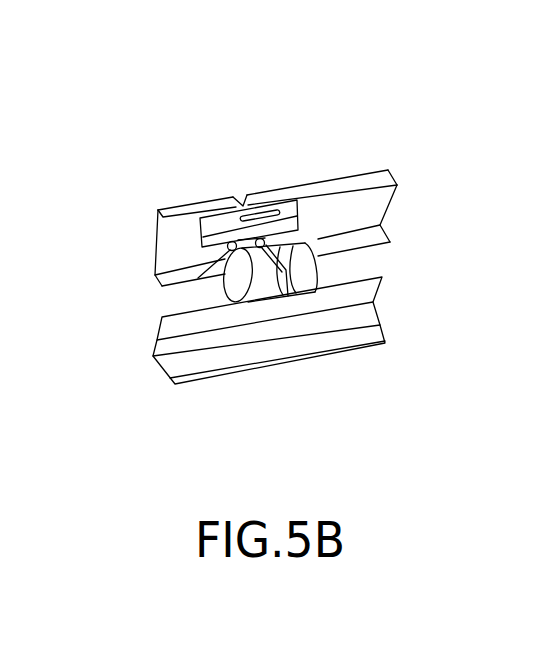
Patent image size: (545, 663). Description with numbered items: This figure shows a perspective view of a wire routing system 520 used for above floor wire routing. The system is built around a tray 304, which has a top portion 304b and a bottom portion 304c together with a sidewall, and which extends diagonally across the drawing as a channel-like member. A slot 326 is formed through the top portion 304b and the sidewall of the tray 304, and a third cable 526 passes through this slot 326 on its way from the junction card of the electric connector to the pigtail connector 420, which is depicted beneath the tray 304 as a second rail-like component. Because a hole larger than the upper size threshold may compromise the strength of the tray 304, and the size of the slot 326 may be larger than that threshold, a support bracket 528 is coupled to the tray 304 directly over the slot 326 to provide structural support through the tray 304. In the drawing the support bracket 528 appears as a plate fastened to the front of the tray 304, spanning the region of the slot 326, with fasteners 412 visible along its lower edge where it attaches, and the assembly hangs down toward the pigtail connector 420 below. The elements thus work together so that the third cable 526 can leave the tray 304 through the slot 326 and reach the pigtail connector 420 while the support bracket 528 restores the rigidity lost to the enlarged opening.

The wire routing system 520 is at (220, 126).
The tray 304 is at (335, 140).
The top portion 304b is at (371, 176).
The bottom portion 304c is at (366, 214).
The slot 326 is at (220, 184).
The third cable 526 is at (252, 244).
The support bracket 528 is at (222, 238).
The fasteners 412 is at (231, 251).
The pigtail connector 420 is at (250, 285).